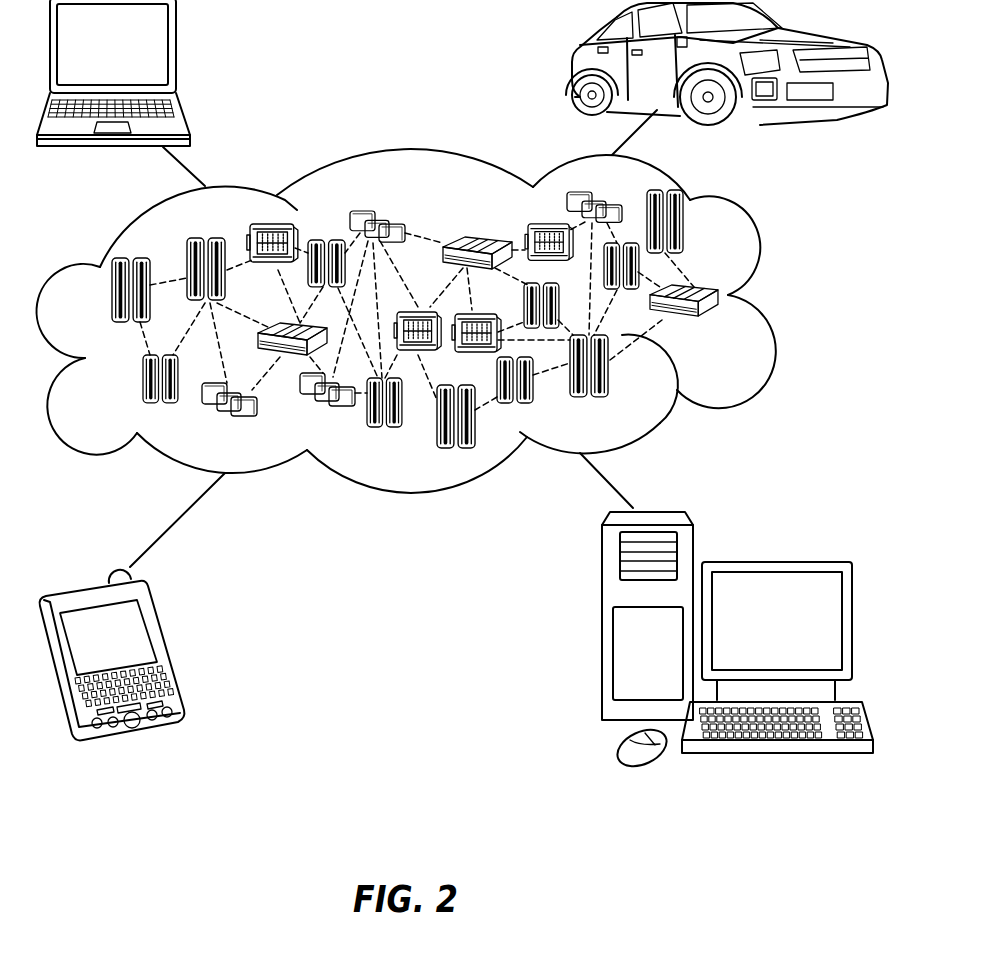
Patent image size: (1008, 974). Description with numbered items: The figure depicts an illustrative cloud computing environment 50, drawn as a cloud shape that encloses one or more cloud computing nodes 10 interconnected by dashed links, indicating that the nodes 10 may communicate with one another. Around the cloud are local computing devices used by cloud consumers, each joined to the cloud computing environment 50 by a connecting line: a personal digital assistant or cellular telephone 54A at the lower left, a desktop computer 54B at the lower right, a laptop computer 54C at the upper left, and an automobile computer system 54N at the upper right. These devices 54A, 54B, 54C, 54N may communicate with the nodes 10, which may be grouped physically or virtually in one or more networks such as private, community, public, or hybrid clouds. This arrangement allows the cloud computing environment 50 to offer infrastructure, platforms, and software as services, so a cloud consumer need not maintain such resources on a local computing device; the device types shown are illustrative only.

The cloud computing node 10 is at (720, 329).
The cloud computing environment 50 is at (776, 300).
The personal digital assistant (PDA) or cellular telephone 54A is at (165, 648).
The desktop computer 54B is at (772, 560).
The laptop computer 54C is at (178, 50).
The automobile computer system 54N is at (574, 66).